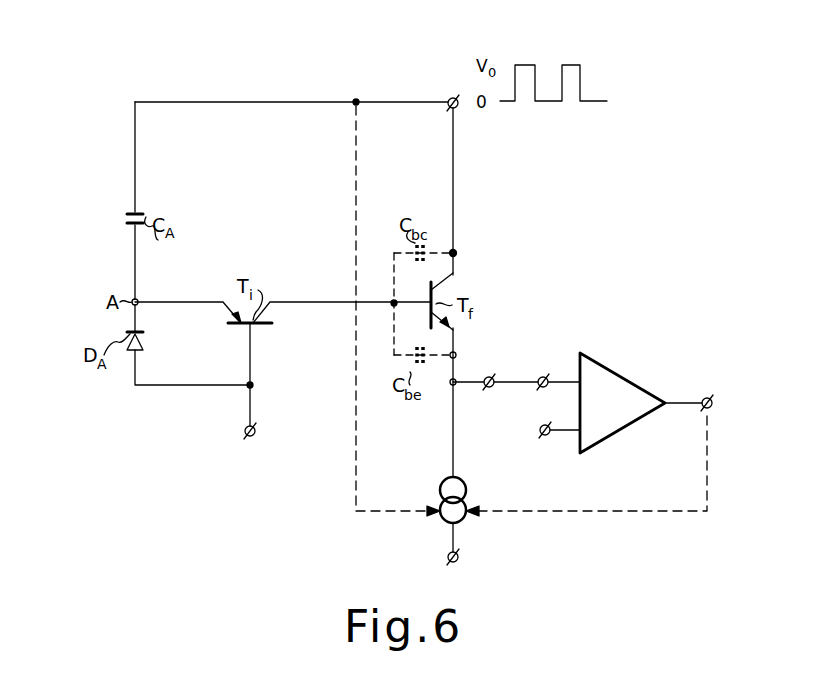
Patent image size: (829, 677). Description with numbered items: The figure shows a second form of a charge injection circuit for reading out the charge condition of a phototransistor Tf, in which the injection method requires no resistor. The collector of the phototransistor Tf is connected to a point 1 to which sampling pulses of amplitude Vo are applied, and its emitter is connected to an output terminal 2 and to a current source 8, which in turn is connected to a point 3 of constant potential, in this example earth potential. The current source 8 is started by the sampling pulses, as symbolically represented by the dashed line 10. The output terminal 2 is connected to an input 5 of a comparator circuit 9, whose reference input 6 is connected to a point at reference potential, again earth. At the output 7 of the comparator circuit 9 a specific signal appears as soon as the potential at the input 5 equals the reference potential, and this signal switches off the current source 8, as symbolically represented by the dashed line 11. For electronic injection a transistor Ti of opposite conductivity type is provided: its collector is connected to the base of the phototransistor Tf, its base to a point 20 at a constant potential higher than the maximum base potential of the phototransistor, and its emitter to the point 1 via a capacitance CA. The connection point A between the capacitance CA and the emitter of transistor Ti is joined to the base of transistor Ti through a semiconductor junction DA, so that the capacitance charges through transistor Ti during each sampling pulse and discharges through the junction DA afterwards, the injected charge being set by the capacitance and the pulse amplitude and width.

The point to which sampling pulses are applied 1 is at (452, 98).
The output terminal 2 is at (490, 377).
The point of constant potential 3 is at (459, 557).
The input of comparator circuit 5 is at (545, 377).
The reference input of comparator circuit 6 is at (542, 426).
The output of comparator circuit 7 is at (708, 397).
The current source 8 is at (466, 494).
The comparator circuit 9 is at (642, 426).
The dashed line 10 is at (390, 513).
The dashed line 11 is at (583, 513).
The point at constant potential 20 is at (255, 433).